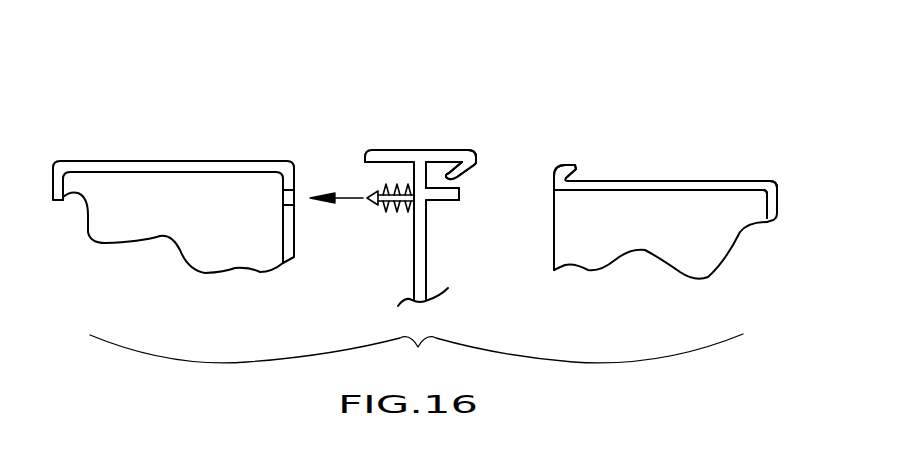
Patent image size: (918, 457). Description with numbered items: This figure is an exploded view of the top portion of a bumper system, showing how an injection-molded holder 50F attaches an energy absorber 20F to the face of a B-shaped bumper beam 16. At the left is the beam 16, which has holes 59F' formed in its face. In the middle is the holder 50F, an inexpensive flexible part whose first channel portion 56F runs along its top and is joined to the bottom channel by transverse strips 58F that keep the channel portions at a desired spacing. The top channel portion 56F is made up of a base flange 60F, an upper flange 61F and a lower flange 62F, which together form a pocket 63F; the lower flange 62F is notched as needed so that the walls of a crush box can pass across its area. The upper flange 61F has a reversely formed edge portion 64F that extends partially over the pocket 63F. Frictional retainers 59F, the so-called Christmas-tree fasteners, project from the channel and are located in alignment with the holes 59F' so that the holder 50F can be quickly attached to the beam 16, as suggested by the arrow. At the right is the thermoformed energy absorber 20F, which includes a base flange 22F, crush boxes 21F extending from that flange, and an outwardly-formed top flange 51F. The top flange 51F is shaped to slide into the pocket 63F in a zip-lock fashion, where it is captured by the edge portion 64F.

The B-shaped bumper beam 16 is at (115, 112).
The holes 59F' is at (245, 259).
The holder 50F is at (400, 100).
The upper flange 61F is at (390, 150).
The base flange 60F is at (380, 164).
The first channel portion 56F is at (440, 128).
The pocket 63F is at (436, 168).
The reversely formed edge portion 64F is at (460, 171).
The lower flange 62F is at (440, 202).
The transverse strips 58F is at (427, 252).
The frictional retainers 59F is at (362, 236).
The energy absorber 20F is at (718, 136).
The top flange 51F is at (571, 163).
The crush boxes 21F is at (777, 183).
The base flange 22F is at (555, 240).